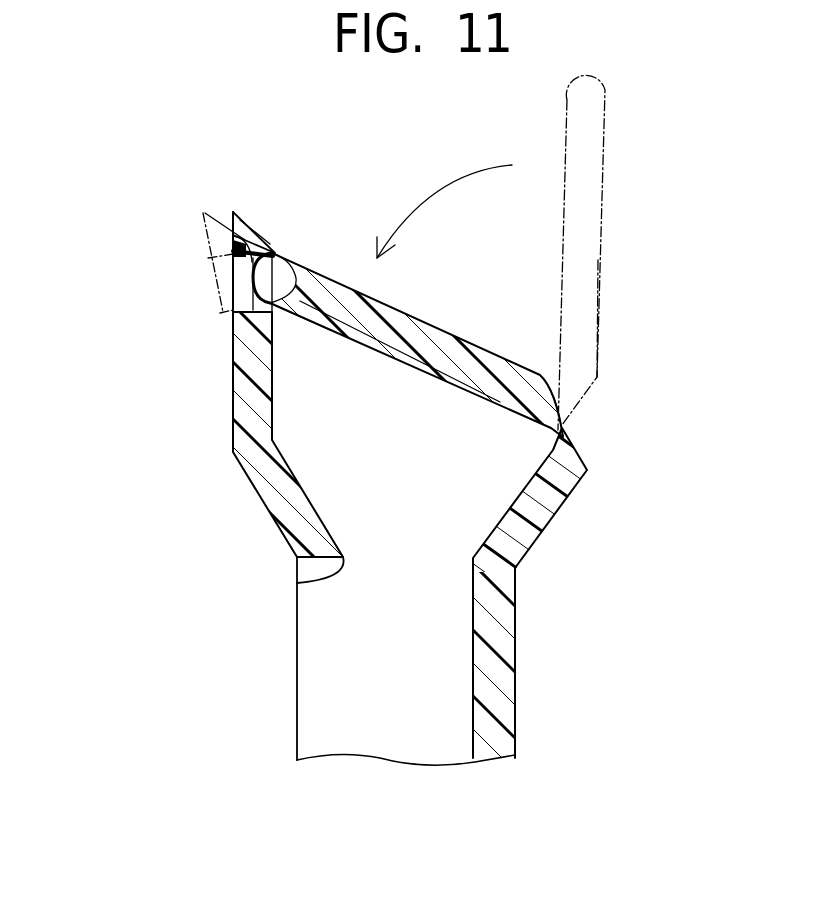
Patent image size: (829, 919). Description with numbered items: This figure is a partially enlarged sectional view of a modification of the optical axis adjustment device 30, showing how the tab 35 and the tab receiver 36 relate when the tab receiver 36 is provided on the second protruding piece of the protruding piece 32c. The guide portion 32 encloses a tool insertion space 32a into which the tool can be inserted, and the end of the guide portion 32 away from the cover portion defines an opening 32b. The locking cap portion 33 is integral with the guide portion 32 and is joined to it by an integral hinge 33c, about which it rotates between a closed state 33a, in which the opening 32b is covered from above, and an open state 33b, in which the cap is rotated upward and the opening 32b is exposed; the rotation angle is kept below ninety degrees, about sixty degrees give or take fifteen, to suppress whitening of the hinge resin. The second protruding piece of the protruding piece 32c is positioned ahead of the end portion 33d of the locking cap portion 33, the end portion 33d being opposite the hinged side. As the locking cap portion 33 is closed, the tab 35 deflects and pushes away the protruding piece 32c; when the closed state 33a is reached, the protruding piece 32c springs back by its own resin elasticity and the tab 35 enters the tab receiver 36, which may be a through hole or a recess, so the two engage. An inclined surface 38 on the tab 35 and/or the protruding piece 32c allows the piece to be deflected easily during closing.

The terminal fitting 30 is at (540, 643).
The guide portion 32 is at (512, 716).
The tool insertion space 32a is at (385, 715).
The opening 32b is at (295, 584).
The protruding piece 32c is at (243, 407).
The locking cap portion 33 is at (451, 347).
The closed state 33a is at (393, 347).
The open state 33b is at (583, 315).
The integral hinge 33c is at (562, 429).
The end portion 33d is at (278, 284).
The tab 35 is at (278, 256).
The tab receiver 36 is at (233, 262).
The inclined surface 38 is at (259, 250).